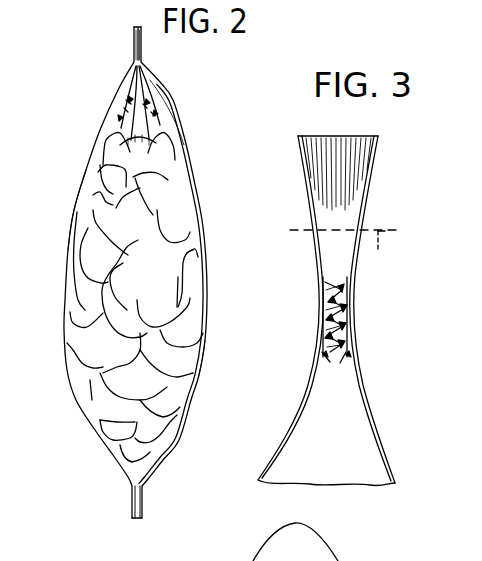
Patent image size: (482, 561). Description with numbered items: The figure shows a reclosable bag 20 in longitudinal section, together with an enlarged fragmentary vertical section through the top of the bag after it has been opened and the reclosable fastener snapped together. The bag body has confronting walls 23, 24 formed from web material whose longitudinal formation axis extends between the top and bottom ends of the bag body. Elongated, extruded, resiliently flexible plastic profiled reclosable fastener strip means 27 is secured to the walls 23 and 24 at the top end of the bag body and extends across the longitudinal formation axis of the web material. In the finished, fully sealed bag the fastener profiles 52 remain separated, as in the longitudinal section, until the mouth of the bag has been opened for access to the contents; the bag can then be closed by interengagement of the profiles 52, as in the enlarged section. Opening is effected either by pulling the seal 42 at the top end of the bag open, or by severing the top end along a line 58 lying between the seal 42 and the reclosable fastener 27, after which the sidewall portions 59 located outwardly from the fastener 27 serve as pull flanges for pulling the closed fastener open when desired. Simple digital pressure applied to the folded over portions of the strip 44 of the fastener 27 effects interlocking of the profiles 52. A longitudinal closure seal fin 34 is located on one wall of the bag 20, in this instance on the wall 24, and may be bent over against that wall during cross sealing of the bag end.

In FIG. 2, the reclosable bag 20 is at (100, 131).
In FIG. 2, the confronting wall 23 is at (70, 240).
In FIG. 3, the confronting wall 23 is at (265, 466).
In FIG. 2, the confronting wall 24 is at (192, 176).
In FIG. 3, the confronting wall 24 is at (380, 466).
In FIG. 2, the reclosable fastener strip means 27 is at (168, 106).
In FIG. 3, the reclosable fastener strip means 27 is at (314, 318).
In FIG. 2, the longitudinal closure seal fin 34 is at (197, 372).
In FIG. 2, the seal 42 is at (134, 30).
In FIG. 3, the seal 42 is at (358, 183).
In FIG. 2, the fastener strip 44 is at (132, 80).
In FIG. 3, the fastener strip 44 is at (322, 356).
In FIG. 2, the fastener profiles 52 is at (138, 150).
In FIG. 3, the fastener profiles 52 is at (343, 343).
In FIG. 3, the severing line 58 is at (395, 250).
In FIG. 3, the sidewall portions 59 is at (355, 250).